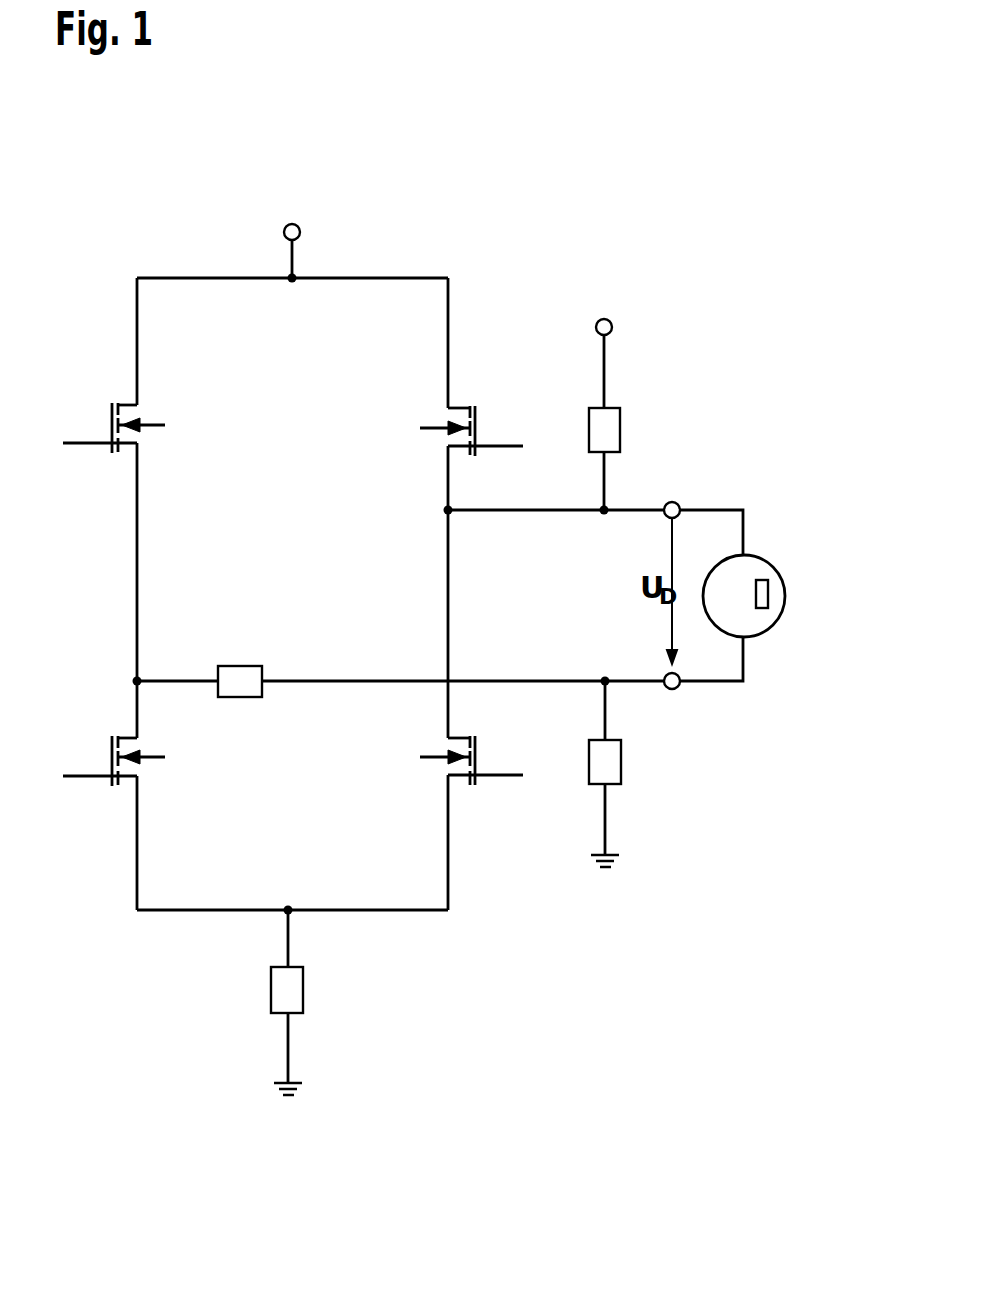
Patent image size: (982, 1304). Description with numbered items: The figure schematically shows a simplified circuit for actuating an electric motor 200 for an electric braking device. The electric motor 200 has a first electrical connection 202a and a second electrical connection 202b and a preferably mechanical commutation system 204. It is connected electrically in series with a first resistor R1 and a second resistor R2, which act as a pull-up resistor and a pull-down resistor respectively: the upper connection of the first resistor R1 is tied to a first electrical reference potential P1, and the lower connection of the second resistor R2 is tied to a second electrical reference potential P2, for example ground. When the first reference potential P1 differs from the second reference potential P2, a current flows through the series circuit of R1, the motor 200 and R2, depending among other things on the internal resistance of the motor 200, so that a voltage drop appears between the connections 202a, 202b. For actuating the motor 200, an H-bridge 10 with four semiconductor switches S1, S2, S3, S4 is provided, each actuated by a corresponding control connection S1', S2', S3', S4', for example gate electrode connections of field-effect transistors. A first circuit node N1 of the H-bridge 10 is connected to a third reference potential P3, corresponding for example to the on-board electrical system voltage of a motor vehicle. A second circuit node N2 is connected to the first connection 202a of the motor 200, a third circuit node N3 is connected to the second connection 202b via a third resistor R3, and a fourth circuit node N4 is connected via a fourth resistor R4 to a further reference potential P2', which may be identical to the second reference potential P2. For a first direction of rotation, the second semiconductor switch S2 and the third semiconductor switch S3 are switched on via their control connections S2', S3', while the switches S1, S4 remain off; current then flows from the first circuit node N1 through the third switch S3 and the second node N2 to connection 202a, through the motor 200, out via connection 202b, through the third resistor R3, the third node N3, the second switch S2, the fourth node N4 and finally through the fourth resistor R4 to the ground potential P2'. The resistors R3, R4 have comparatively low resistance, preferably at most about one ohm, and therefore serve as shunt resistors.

The H-bridge 10 is at (473, 243).
The third reference potential P3 is at (300, 232).
The first circuit node N1 is at (292, 283).
The second circuit node N2 is at (446, 510).
The third circuit node N3 is at (139, 680).
The fourth circuit node N4 is at (288, 906).
The first semiconductor switch S1 is at (107, 381).
The control connection of first semiconductor switch S1' is at (100, 495).
The second semiconductor switch S2 is at (107, 712).
The control connection of second semiconductor switch S2' is at (100, 827).
The third semiconductor switch S3 is at (480, 382).
The control connection of third semiconductor switch S3' is at (501, 405).
The fourth semiconductor switch S4 is at (502, 737).
The control connection of fourth semiconductor switch S4' is at (486, 826).
The first resistor R1 is at (620, 430).
The second resistor R2 is at (621, 762).
The third resistor R3 is at (240, 666).
The fourth resistor R4 is at (303, 990).
The first electrical reference potential P1 is at (612, 327).
The second electrical reference potential P2 is at (655, 853).
The further reference potential P2' is at (342, 1083).
The first electrical connection 202a is at (678, 504).
The second electrical connection 202b is at (678, 688).
The electric motor 200 is at (772, 624).
The commutation system 204 is at (768, 595).